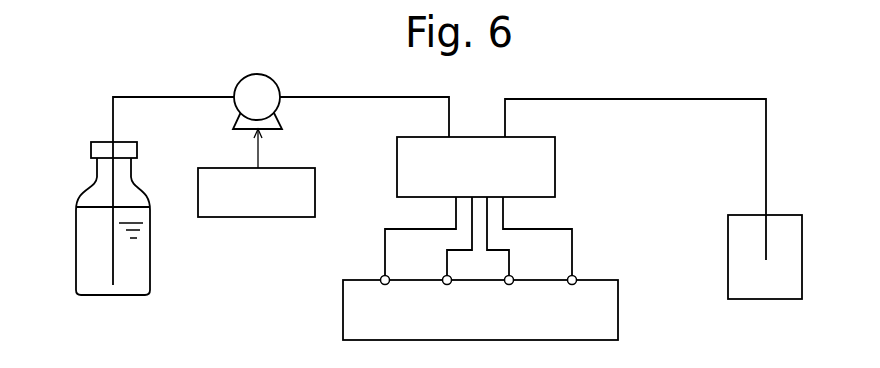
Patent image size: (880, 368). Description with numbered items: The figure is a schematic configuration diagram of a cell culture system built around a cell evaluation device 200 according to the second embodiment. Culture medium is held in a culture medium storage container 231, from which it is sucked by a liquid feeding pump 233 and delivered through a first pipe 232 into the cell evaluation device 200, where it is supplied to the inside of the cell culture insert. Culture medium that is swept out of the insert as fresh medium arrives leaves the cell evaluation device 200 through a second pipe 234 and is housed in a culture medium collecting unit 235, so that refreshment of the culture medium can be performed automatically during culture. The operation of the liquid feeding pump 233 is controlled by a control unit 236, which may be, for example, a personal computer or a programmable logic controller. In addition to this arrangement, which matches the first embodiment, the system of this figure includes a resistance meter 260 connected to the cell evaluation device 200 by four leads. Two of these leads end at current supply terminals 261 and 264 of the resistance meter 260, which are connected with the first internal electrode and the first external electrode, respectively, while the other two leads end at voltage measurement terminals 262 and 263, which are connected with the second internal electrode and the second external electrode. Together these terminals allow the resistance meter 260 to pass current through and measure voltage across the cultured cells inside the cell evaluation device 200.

The cell evaluation device 200 is at (555, 165).
The culture medium storage container 231 is at (75, 237).
The first pipe 232 is at (167, 102).
The liquid feeding pump 233 is at (278, 107).
The second pipe 234 is at (663, 102).
The culture medium collecting unit 235 is at (802, 240).
The control unit 236 is at (285, 217).
The resistance meter 260 is at (618, 313).
The current supply terminal 261 is at (381, 276).
The voltage measurement terminal 262 is at (443, 276).
The voltage measurement terminal 263 is at (513, 276).
The current supply terminal 264 is at (575, 276).